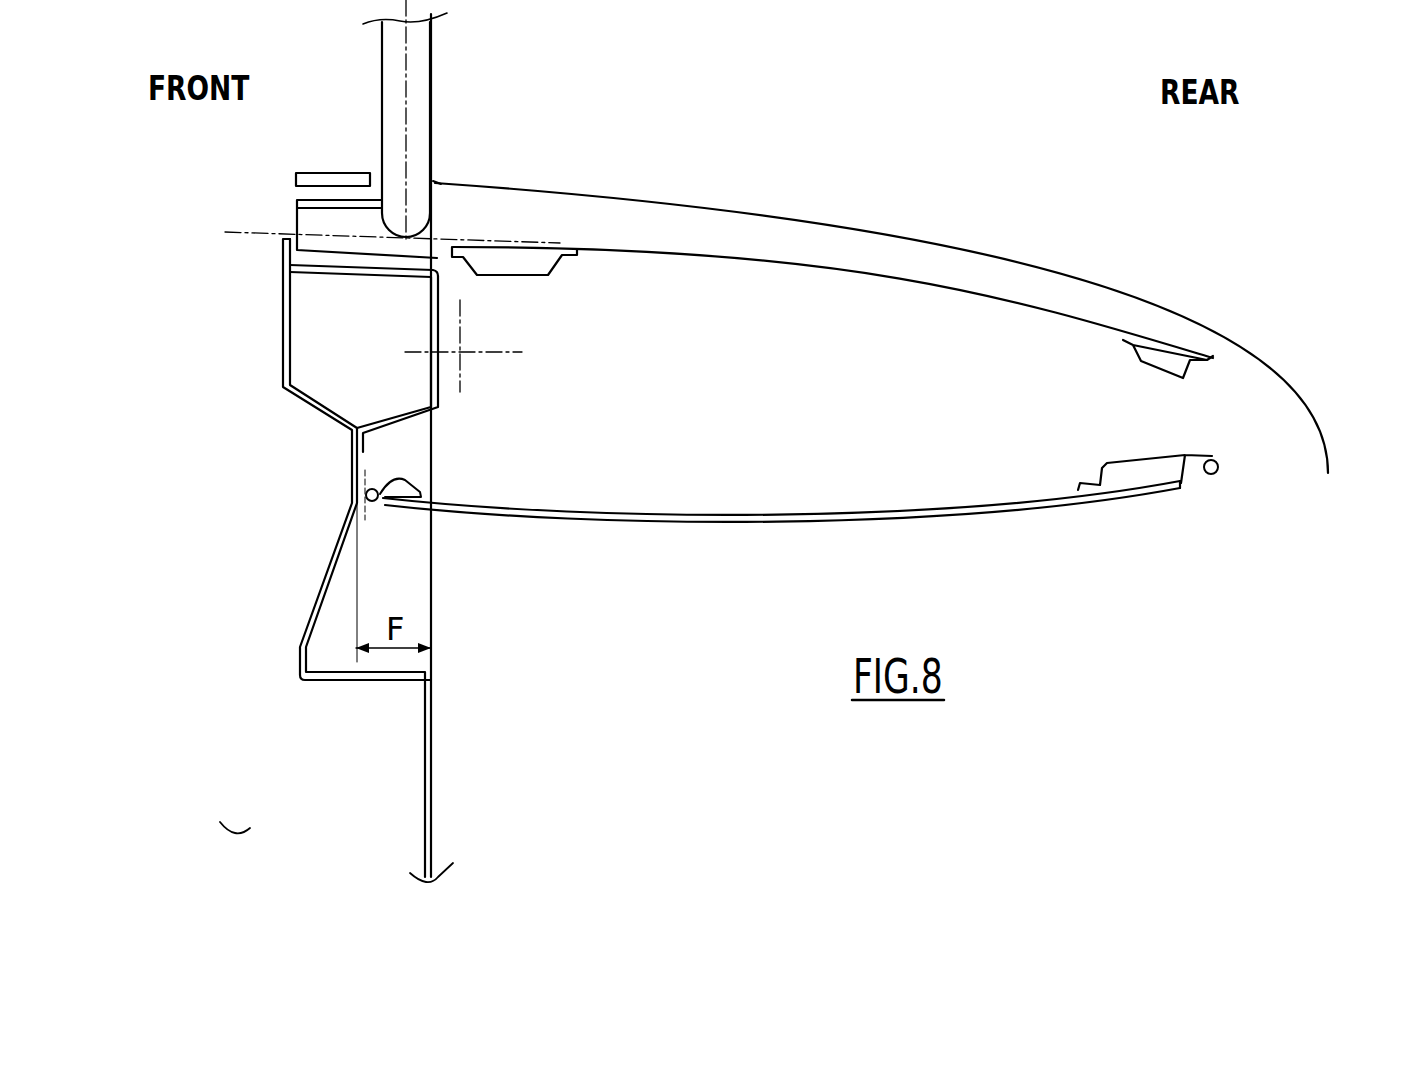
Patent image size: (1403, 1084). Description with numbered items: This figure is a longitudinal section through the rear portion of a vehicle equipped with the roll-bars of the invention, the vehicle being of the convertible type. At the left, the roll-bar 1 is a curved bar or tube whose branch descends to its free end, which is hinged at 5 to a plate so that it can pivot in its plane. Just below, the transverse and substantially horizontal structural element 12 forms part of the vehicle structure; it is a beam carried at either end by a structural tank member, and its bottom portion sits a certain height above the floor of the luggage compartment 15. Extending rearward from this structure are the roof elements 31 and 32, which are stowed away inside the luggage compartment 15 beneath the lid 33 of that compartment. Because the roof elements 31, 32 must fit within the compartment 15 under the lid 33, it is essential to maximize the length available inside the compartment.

The roll-bar 1 is at (449, 438).
The hinge 5 is at (331, 105).
The structural element 12 is at (323, 560).
The luggage compartment 15 is at (819, 395).
The roof element 31 is at (832, 242).
The roof element 32 is at (791, 448).
The lid 33 is at (880, 289).